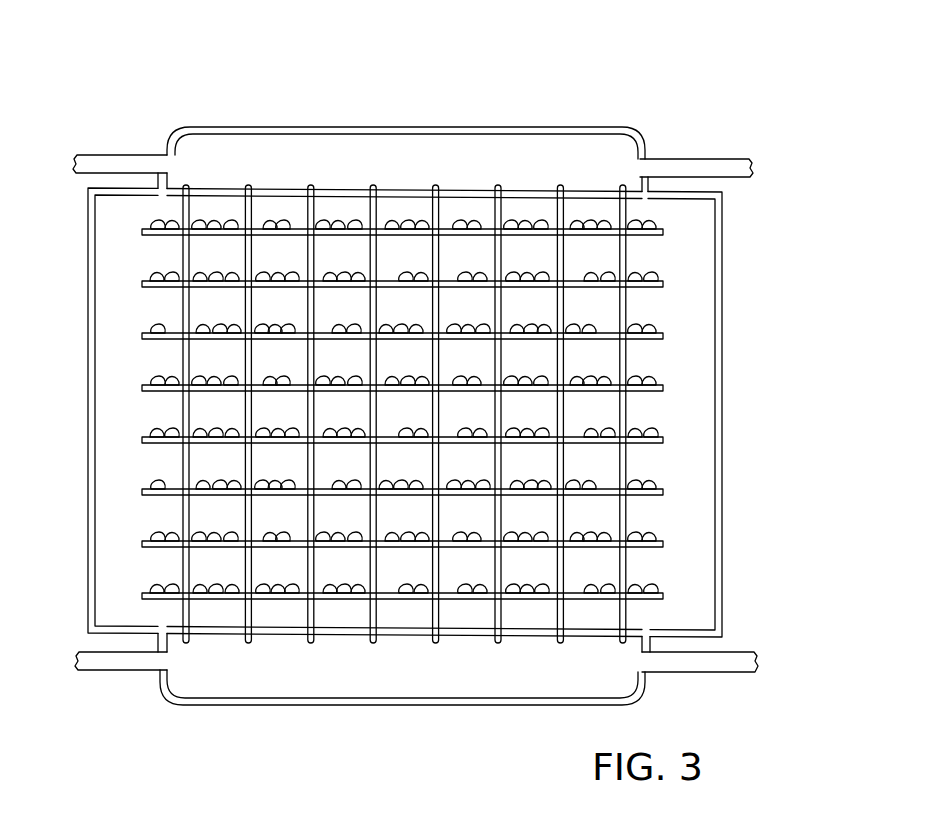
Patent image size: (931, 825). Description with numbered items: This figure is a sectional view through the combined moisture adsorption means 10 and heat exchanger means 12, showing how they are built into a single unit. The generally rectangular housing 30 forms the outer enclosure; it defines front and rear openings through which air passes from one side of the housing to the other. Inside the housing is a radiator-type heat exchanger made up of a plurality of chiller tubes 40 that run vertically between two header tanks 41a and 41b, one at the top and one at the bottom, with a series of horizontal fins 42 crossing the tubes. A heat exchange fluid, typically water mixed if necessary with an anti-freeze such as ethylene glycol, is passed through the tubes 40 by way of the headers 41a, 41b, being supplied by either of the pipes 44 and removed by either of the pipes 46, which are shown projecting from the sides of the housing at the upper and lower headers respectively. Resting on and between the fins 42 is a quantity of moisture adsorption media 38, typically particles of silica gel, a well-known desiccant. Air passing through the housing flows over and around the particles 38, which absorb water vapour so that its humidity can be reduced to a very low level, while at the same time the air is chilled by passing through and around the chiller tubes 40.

The housing 30 is at (720, 537).
The moisture adsorption media 38 is at (633, 480).
The chiller tubes 40 is at (627, 298).
The fins 42 is at (595, 393).
The pipes 44 is at (125, 155).
The pipes 46 is at (128, 673).
The header tank 41a is at (386, 165).
The header tank 41b is at (267, 675).
The heat exchanger means 12 is at (386, 757).
The moisture adsorption means 10 is at (450, 745).